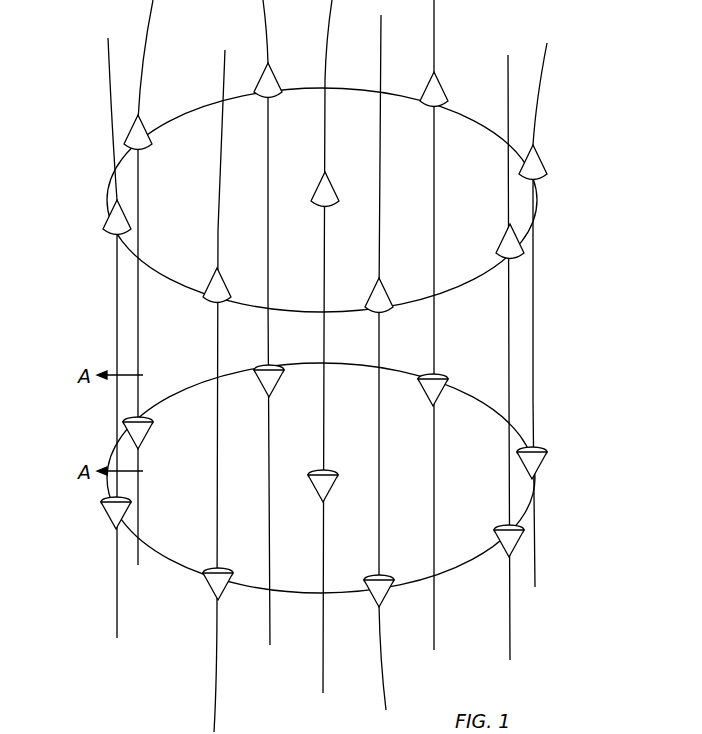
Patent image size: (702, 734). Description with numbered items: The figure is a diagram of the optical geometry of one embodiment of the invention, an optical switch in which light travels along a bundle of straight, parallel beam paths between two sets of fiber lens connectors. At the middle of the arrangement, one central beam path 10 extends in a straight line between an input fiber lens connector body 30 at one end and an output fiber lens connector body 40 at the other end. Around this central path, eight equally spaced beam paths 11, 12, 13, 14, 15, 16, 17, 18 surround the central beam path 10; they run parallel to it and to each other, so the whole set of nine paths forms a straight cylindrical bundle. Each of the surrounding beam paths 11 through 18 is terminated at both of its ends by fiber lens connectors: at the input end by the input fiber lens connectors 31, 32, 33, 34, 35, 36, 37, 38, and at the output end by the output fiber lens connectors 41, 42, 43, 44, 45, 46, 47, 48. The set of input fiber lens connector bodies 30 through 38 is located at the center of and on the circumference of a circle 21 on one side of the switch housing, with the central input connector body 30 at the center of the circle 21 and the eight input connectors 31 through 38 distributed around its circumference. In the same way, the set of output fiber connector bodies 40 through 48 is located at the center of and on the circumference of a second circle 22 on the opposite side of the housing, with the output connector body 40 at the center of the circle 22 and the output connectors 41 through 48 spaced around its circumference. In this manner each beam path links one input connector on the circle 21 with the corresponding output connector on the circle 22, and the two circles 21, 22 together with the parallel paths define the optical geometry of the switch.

The central beam path 10 is at (324, 340).
The beam path 11 is at (434, 198).
The beam path 12 is at (534, 287).
The beam path 13 is at (510, 487).
The beam path 14 is at (379, 455).
The beam path 15 is at (215, 360).
The beam path 16 is at (116, 313).
The beam path 17 is at (138, 238).
The beam path 18 is at (267, 243).
The circle 21 is at (537, 483).
The circle 22 is at (538, 198).
The input fiber lens connector body 30 is at (330, 490).
The input fiber lens connector 31 is at (427, 392).
The input fiber lens connector 32 is at (543, 452).
The input fiber lens connector 33 is at (503, 545).
The input fiber lens connector 34 is at (383, 592).
The input fiber lens connector 35 is at (207, 597).
The input fiber lens connector 36 is at (103, 508).
The input fiber lens connector 37 is at (143, 432).
The input fiber lens connector 38 is at (272, 386).
The output fiber lens connector body 40 is at (330, 187).
The output fiber lens connector 41 is at (440, 92).
The output fiber lens connector 42 is at (535, 165).
The output fiber lens connector 43 is at (500, 250).
The output fiber lens connector 44 is at (387, 302).
The output fiber lens connector 45 is at (203, 302).
The output fiber lens connector 46 is at (108, 228).
The output fiber lens connector 47 is at (143, 133).
The output fiber lens connector 48 is at (272, 85).